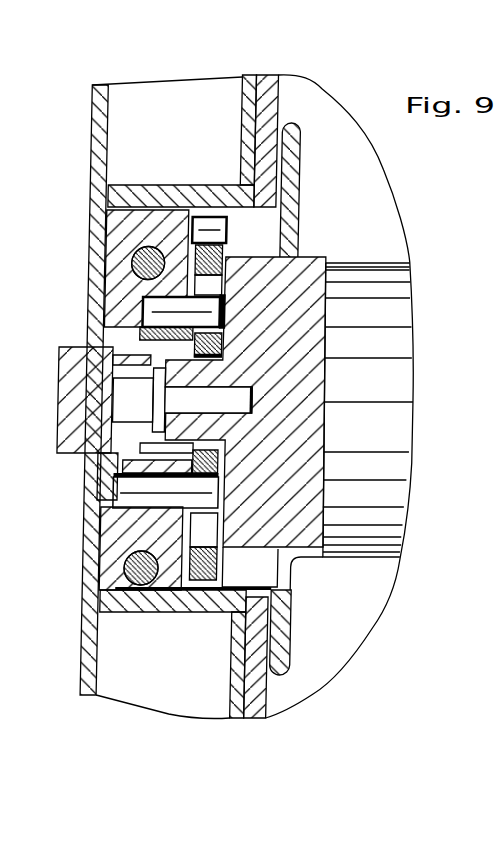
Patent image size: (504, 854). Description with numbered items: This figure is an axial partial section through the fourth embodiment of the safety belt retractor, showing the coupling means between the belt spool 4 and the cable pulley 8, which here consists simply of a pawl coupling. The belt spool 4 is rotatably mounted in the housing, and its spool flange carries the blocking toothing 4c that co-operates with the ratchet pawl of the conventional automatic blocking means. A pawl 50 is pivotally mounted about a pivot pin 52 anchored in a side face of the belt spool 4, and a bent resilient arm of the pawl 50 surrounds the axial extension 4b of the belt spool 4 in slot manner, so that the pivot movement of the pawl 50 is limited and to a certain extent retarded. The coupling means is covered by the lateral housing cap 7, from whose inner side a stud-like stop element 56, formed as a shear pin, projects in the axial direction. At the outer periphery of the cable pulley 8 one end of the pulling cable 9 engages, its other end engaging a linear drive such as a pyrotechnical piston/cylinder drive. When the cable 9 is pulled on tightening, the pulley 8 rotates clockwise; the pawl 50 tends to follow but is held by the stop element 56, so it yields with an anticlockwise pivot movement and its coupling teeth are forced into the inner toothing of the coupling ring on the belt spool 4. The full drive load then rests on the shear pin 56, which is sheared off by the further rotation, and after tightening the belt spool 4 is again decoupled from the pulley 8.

The belt spool 4 is at (350, 285).
The axial extension 4b is at (159, 374).
The blocking toothing 4c is at (284, 567).
The housing cap 7 is at (97, 636).
The cable pulley 8 is at (125, 292).
The pulling cable 9 is at (130, 268).
The pawl 50 is at (223, 451).
The pivot pin 52 is at (140, 316).
The stop element 56 is at (103, 513).